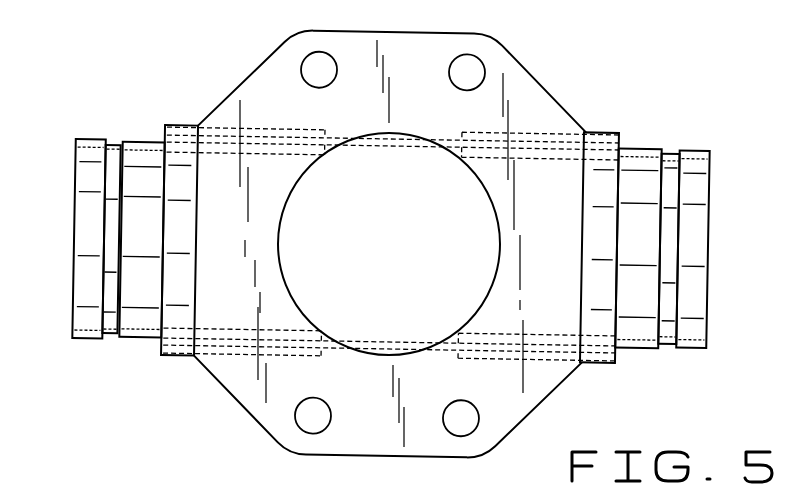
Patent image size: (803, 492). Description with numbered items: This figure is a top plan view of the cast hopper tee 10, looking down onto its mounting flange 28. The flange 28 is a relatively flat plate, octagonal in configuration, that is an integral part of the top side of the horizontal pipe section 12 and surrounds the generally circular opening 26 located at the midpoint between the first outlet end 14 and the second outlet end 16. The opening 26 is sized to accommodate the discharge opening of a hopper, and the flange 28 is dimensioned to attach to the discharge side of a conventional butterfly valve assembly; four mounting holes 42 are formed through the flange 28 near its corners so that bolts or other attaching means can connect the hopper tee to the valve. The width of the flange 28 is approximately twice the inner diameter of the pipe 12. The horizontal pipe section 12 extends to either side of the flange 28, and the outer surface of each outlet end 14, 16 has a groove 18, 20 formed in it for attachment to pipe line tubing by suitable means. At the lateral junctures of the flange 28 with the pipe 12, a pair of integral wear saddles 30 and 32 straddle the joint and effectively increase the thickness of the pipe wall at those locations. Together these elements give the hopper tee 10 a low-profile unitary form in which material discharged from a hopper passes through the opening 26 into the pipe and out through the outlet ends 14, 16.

The cast hopper tee 10 is at (553, 84).
The horizontal pipe section 12 is at (625, 150).
The first outlet end 14 is at (708, 252).
The second outlet end 16 is at (73, 230).
The groove 18 is at (668, 150).
The groove 20 is at (106, 322).
The circular opening 26 is at (462, 240).
The flange 28 is at (424, 56).
The wear saddle 30 is at (603, 146).
The wear saddle 32 is at (183, 150).
The mounting holes 42 is at (319, 68).